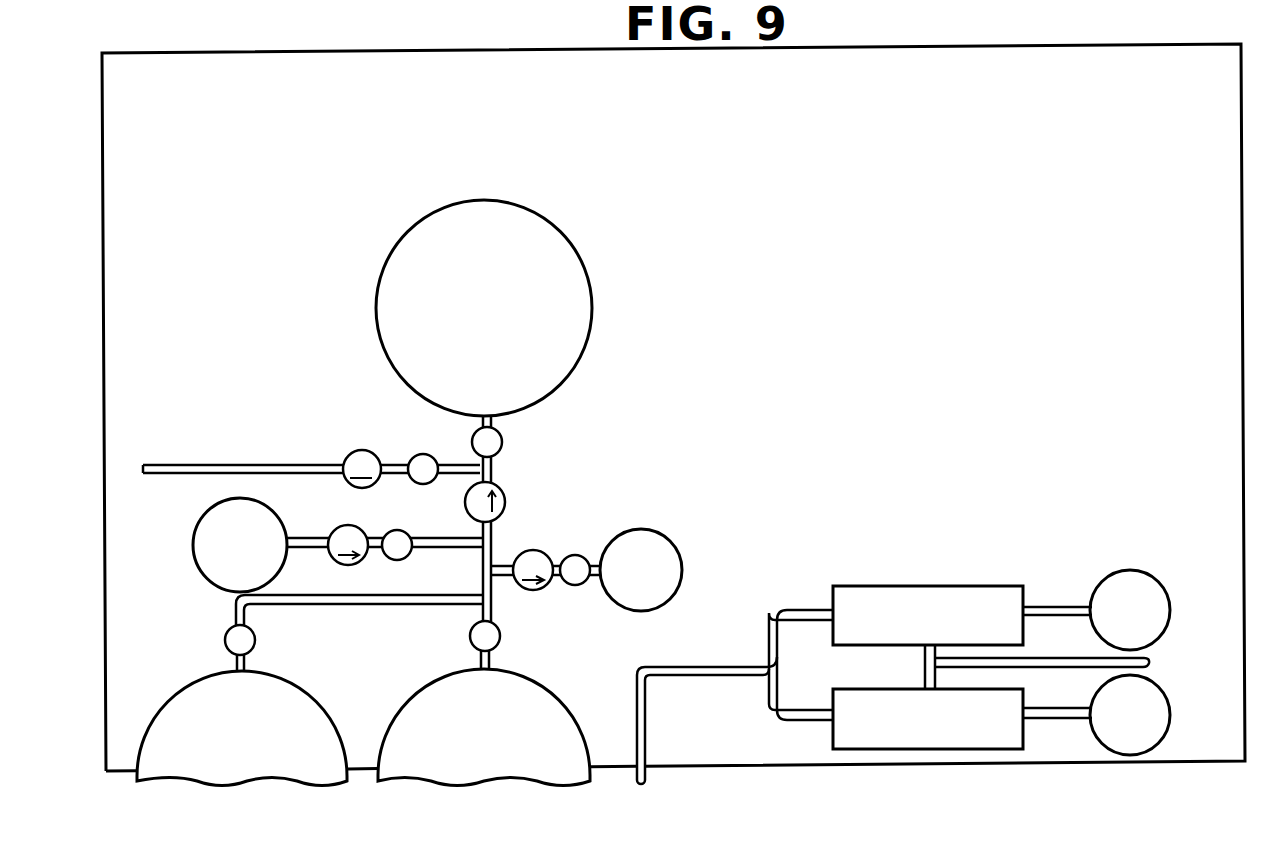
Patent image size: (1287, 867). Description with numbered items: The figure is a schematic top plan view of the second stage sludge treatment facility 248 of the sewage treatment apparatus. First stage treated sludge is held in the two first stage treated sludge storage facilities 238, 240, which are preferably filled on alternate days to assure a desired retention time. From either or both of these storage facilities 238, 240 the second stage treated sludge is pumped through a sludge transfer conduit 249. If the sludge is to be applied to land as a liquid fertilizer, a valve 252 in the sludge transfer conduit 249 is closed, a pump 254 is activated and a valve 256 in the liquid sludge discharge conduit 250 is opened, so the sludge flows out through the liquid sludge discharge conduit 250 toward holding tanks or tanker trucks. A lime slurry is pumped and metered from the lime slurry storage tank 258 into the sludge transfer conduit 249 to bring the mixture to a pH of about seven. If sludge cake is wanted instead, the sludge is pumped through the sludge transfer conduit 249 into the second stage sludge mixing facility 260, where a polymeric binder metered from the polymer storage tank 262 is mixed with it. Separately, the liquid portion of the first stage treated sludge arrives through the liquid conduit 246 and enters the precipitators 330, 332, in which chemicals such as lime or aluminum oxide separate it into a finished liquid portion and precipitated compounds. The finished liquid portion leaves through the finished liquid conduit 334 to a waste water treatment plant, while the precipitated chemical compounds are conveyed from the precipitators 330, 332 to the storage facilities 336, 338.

The first stage treated sludge storage facility 238 is at (242, 705).
The first stage treated sludge storage facility 240 is at (484, 703).
The liquid conduit 246 is at (636, 722).
The second stage sludge treatment facility 248 is at (318, 52).
The sludge transfer conduit 249 is at (494, 538).
The liquid sludge discharge conduit 250 is at (266, 463).
The valve 252 is at (500, 446).
The pump 254 is at (350, 450).
The valve 256 is at (437, 484).
The lime slurry storage tank 258 is at (260, 514).
The second stage sludge mixing facility 260 is at (567, 360).
The polymer storage tank 262 is at (660, 548).
The precipitator 330 is at (928, 697).
The precipitator 332 is at (928, 615).
The finished liquid conduit 334 is at (1150, 668).
The storage facility 336 is at (1160, 717).
The storage facility 338 is at (1154, 598).